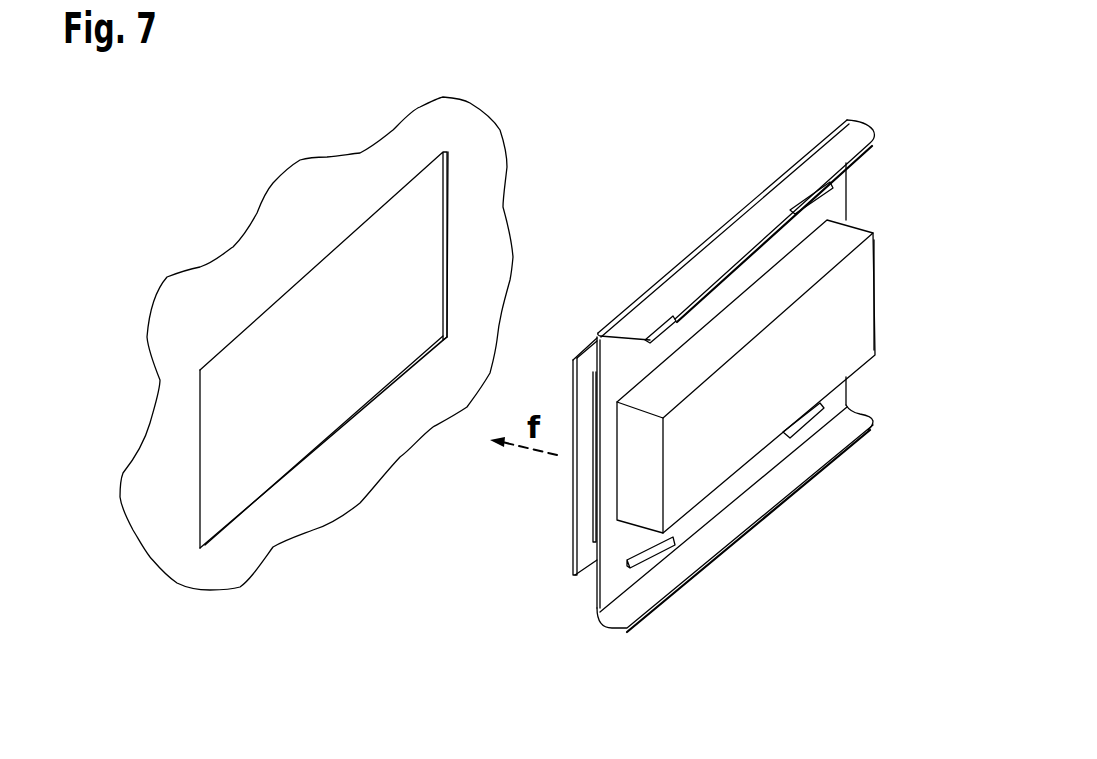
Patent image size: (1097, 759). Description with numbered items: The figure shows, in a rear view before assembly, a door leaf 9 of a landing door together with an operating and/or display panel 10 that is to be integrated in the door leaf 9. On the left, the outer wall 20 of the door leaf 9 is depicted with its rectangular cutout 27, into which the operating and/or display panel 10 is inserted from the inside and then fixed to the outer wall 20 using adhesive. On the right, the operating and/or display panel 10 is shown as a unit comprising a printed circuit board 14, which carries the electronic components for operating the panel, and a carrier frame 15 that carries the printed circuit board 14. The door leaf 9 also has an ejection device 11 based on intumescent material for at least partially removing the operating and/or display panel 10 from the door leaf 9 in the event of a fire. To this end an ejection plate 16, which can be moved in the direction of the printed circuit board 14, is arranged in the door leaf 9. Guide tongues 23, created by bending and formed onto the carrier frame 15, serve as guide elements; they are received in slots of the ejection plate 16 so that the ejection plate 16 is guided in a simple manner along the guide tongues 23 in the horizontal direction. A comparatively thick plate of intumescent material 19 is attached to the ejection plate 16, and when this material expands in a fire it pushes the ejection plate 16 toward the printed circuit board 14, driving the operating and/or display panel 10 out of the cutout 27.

The door leaf 9 is at (247, 158).
The outer wall 20 is at (323, 175).
The cutout 27 is at (215, 407).
The operating and/or display panel 10 is at (705, 178).
The ejection device 11 is at (890, 276).
The intumescent material 19 is at (862, 322).
The guide tongues 23 is at (665, 318).
The ejection plate 16 is at (737, 482).
The printed circuit board 14 is at (594, 520).
The carrier frame 15 is at (588, 560).